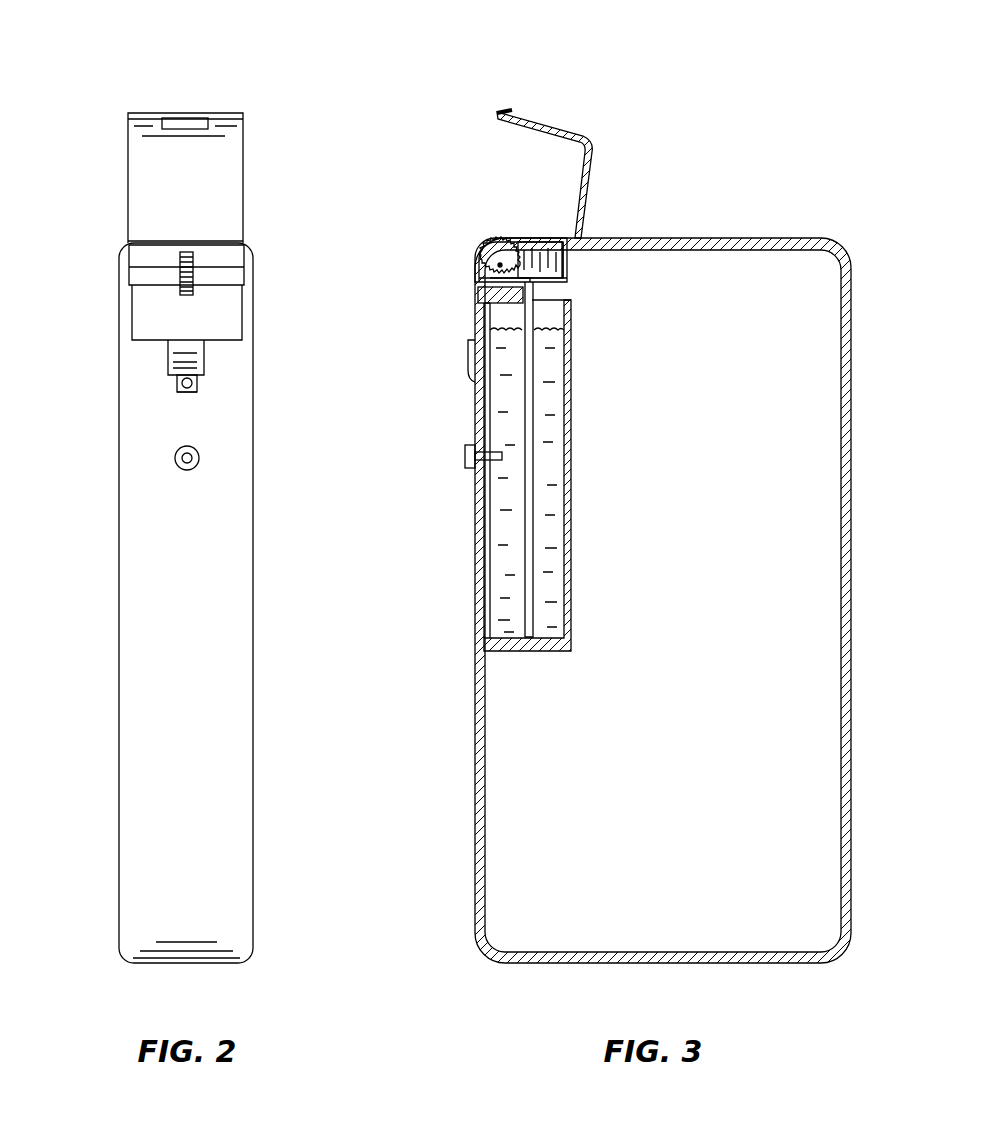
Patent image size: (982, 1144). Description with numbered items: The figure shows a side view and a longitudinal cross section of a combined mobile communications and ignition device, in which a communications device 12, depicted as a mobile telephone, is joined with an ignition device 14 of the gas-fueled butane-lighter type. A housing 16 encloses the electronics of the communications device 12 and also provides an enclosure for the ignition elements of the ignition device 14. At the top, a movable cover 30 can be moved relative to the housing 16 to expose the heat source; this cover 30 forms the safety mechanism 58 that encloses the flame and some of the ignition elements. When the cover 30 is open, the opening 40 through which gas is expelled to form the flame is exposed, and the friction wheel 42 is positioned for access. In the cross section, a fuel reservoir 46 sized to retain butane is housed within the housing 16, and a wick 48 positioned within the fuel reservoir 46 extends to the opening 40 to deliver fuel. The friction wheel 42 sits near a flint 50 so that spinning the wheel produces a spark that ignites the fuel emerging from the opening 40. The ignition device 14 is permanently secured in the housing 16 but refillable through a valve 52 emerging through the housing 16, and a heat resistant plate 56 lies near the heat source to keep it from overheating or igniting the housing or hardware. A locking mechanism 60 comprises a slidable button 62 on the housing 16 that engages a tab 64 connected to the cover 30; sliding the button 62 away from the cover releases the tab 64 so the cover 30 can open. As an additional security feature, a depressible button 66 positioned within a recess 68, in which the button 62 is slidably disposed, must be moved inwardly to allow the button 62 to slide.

In FIG. 3, the communications device 12 is at (860, 428).
In FIG. 2, the ignition device 14 is at (117, 194).
In FIG. 3, the ignition device 14 is at (498, 218).
In FIG. 2, the housing 16 is at (240, 537).
In FIG. 3, the housing 16 is at (812, 237).
In FIG. 2, the movable cover 30 is at (232, 157).
In FIG. 3, the movable cover 30 is at (598, 152).
In FIG. 3, the opening 40 is at (541, 262).
In FIG. 2, the friction wheel 42 is at (180, 258).
In FIG. 3, the friction wheel 42 is at (486, 250).
In FIG. 3, the fuel reservoir 46 is at (571, 450).
In FIG. 3, the wick 48 is at (540, 405).
In FIG. 3, the flint 50 is at (478, 291).
In FIG. 2, the valve 52 is at (200, 458).
In FIG. 3, the valve 52 is at (465, 462).
In FIG. 2, the heat resistant plate 56 is at (236, 272).
In FIG. 3, the heat resistant plate 56 is at (578, 268).
In FIG. 2, the safety mechanism 58 is at (151, 90).
In FIG. 3, the safety mechanism 58 is at (568, 108).
In FIG. 2, the locking mechanism 60 is at (155, 362).
In FIG. 2, the slidable button 62 is at (198, 360).
In FIG. 3, the slidable button 62 is at (468, 358).
In FIG. 2, the tab 64 is at (186, 114).
In FIG. 3, the tab 64 is at (500, 112).
In FIG. 2, the depressible button 66 is at (195, 384).
In FIG. 2, the recess 68 is at (180, 384).